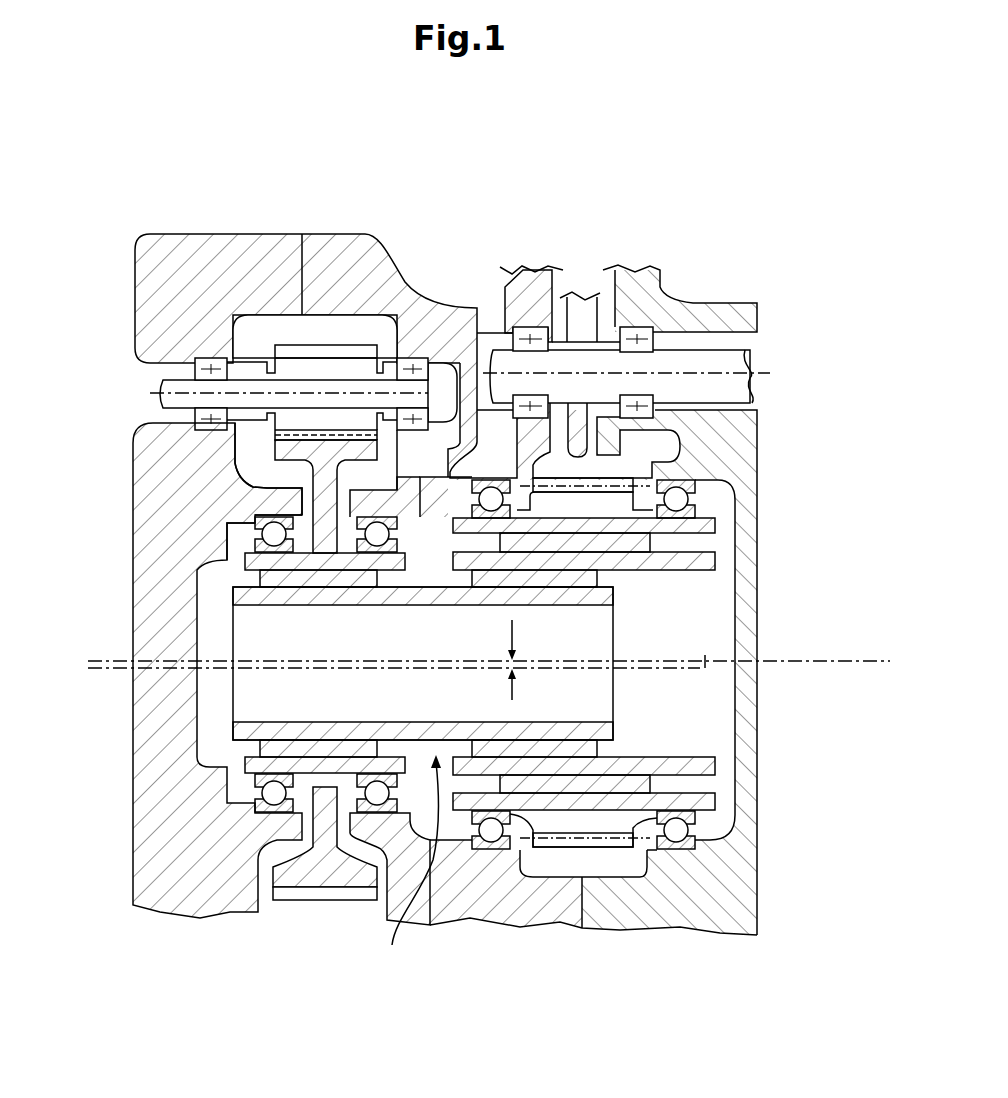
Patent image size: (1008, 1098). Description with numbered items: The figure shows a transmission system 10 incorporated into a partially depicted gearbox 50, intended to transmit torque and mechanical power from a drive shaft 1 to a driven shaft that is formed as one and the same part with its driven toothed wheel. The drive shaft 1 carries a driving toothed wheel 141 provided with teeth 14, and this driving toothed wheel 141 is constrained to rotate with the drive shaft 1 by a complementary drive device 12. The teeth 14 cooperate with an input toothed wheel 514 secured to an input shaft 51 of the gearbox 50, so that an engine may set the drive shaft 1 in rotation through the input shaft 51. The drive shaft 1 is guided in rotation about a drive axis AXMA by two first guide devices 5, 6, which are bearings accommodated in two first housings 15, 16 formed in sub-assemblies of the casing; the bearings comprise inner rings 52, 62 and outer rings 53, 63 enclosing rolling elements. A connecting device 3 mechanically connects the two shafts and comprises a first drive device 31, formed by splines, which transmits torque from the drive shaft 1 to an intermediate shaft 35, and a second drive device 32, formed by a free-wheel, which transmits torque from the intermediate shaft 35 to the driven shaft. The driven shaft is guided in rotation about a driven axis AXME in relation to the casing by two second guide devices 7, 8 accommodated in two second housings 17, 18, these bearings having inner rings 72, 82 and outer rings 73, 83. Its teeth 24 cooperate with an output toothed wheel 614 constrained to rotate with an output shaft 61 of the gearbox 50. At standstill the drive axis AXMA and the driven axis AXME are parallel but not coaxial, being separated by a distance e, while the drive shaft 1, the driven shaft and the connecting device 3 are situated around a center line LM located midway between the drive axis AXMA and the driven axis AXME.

The gearbox 50 is at (662, 201).
The input shaft 51 is at (292, 367).
The input toothed wheel 514 is at (346, 353).
The output shaft 61 is at (713, 360).
The output toothed wheel 614 is at (587, 468).
The first housing 16 is at (162, 394).
The first housing 15 is at (268, 513).
The outer ring 53 is at (245, 500).
The first guide device 5 is at (236, 528).
The inner ring 52 is at (290, 550).
The driving toothed wheel 141 is at (320, 845).
The complementary drive device 12 is at (310, 577).
The inner ring 62 is at (383, 540).
The first guide device 6 is at (383, 513).
The outer ring 63 is at (425, 520).
The second drive device 32 is at (553, 545).
The first drive device 31 is at (560, 752).
The drive shaft 1 is at (432, 700).
The connecting device 3 is at (640, 723).
The intermediate shaft 35 is at (700, 768).
The second housing 18 is at (675, 850).
The teeth 14 is at (340, 870).
The transmission system 10 is at (408, 868).
The second guide device 7 is at (490, 832).
The outer ring 73 is at (527, 810).
The second housing 17 is at (500, 845).
The inner ring 72 is at (557, 810).
The teeth 24 is at (610, 840).
The outer ring 83 is at (740, 490).
The second guide device 8 is at (690, 497).
The inner ring 82 is at (695, 512).
The center line LM is at (705, 662).
The driven axis AXME is at (810, 657).
The drive axis AXMA is at (394, 691).
The distance e is at (520, 658).